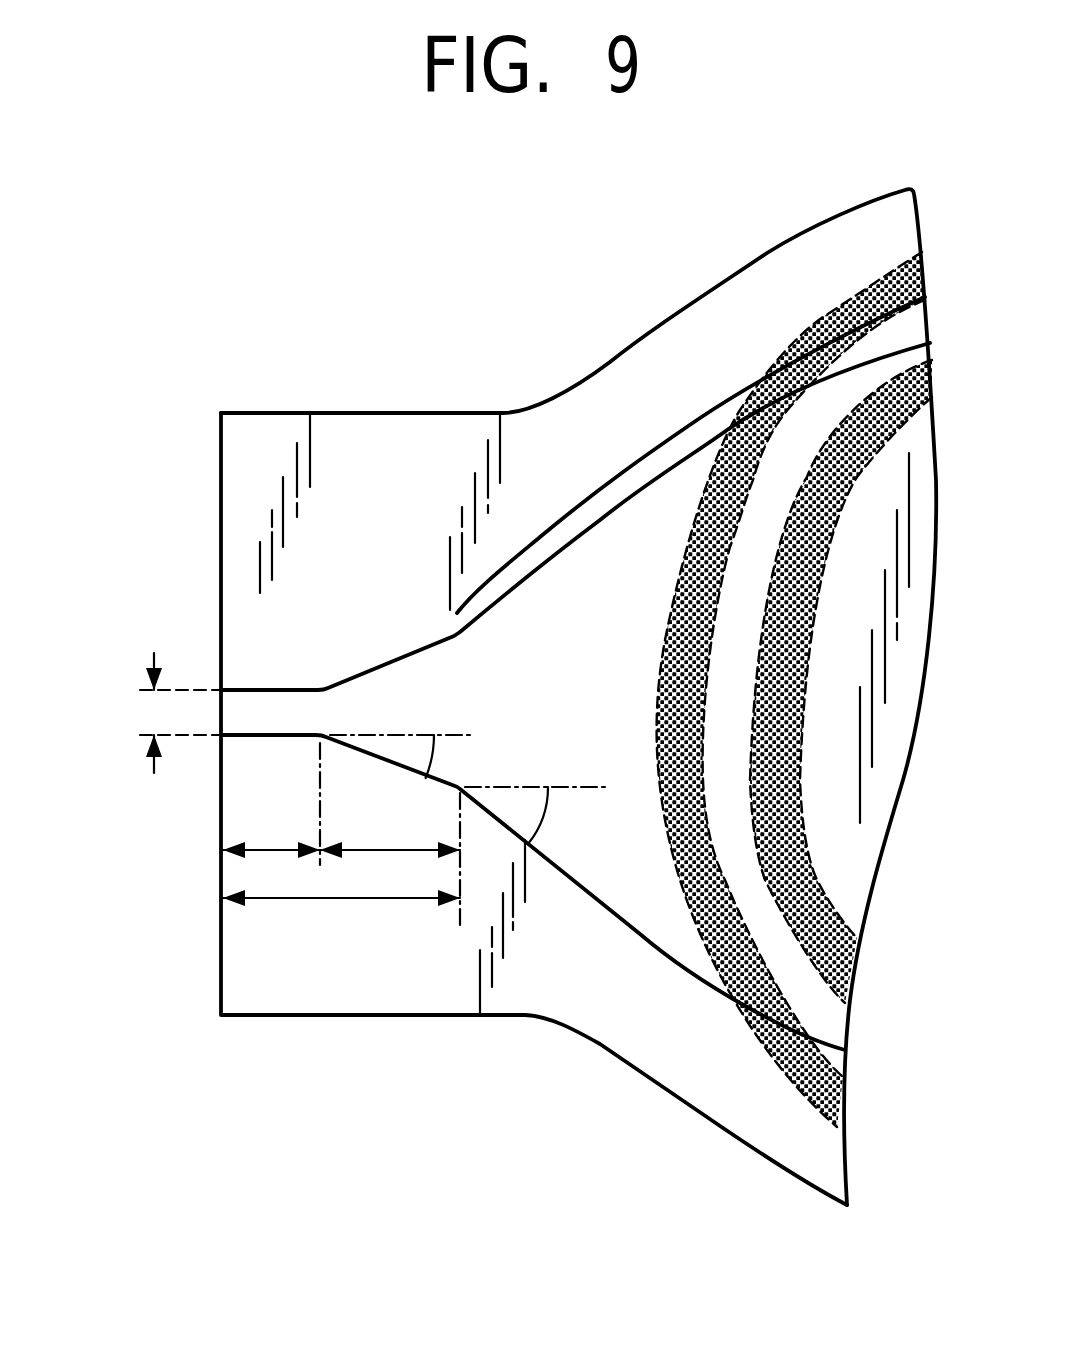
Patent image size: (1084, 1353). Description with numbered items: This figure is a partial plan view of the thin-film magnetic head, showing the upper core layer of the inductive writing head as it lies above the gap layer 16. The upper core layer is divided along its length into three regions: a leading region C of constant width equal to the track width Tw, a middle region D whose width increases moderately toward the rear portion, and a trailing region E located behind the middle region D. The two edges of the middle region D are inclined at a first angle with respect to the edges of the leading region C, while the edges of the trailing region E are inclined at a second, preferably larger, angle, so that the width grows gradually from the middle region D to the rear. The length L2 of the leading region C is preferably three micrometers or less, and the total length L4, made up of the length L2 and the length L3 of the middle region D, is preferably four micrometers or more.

The gap layer 16 is at (356, 455).
The leading region C is at (315, 684).
The middle region D is at (385, 640).
The trailing region E is at (731, 399).
The track width Tw is at (122, 713).
The length of the leading region L2 is at (271, 825).
The length of the middle region L3 is at (390, 825).
The total length L4 is at (341, 921).